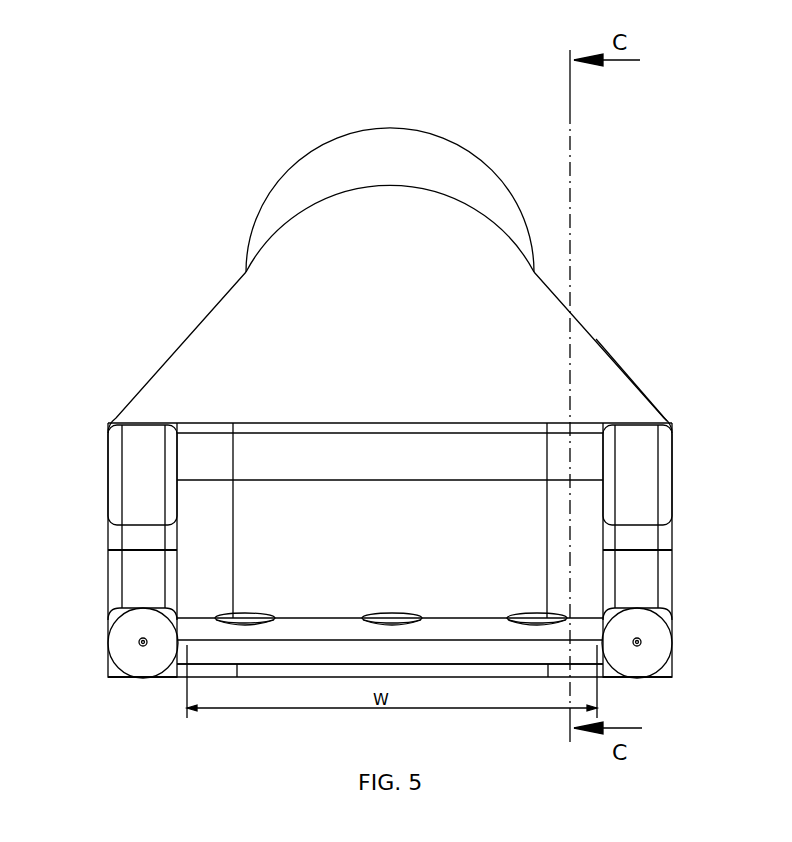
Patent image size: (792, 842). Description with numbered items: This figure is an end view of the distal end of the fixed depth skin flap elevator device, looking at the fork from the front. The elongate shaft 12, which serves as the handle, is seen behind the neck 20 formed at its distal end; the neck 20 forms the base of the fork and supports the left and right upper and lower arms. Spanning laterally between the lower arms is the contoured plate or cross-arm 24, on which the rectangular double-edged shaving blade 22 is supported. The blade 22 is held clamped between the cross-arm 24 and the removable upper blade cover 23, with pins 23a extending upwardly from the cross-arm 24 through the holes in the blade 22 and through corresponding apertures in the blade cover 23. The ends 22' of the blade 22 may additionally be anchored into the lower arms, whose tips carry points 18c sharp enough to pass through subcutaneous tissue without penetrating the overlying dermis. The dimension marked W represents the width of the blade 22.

The elongate shaft 12 is at (378, 145).
The neck 20 is at (595, 363).
The points 18c is at (130, 652).
The blade 22 is at (390, 699).
The ends of the blade 22' is at (390, 706).
The upper blade cover 23 is at (290, 628).
The pins 23a is at (247, 622).
The cross-arm 24 is at (508, 667).